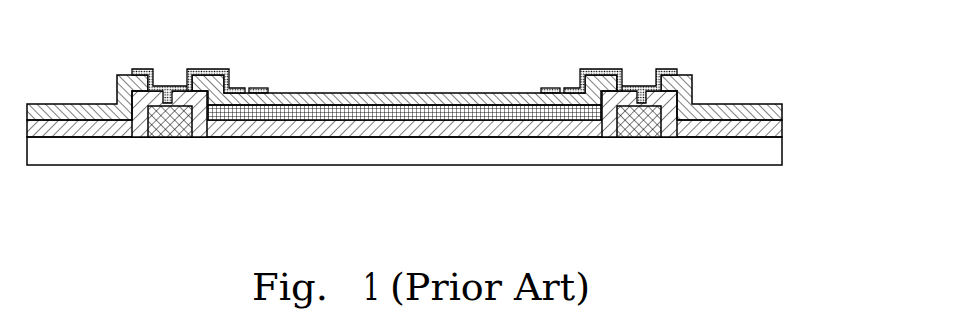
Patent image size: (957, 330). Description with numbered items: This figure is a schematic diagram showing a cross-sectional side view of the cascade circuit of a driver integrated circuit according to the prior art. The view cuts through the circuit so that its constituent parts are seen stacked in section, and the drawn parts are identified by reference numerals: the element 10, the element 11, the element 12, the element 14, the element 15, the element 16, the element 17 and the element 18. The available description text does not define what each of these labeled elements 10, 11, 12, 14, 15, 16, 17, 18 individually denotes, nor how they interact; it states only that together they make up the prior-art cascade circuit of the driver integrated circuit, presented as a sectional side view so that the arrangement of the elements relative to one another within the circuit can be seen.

The substrate 10 is at (492, 155).
The source region 11 is at (157, 137).
The drain region 12 is at (647, 137).
The metal layer 14 is at (298, 137).
The insulating layer 15 is at (711, 105).
The drain electrode 16 is at (662, 69).
The source electrode 17 is at (142, 69).
The semiconductor layer 18 is at (337, 93).